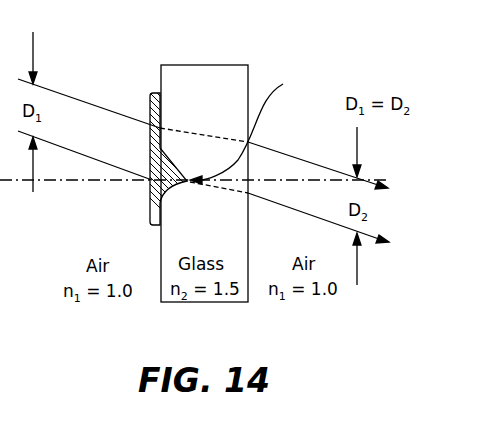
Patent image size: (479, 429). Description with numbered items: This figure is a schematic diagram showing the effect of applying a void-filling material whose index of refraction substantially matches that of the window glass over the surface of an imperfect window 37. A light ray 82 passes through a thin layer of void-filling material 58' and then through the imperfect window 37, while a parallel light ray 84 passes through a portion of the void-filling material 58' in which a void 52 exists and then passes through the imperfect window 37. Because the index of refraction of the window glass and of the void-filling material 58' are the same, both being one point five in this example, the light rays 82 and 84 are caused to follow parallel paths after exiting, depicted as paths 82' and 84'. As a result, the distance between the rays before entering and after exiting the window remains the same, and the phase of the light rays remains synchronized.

The imperfect window 37 is at (237, 300).
The void-filling material 58' is at (282, 134).
The light ray 82 is at (133, 104).
The light ray 84 is at (133, 157).
The path 82' is at (318, 161).
The path 84' is at (318, 215).
The void 52 is at (249, 131).